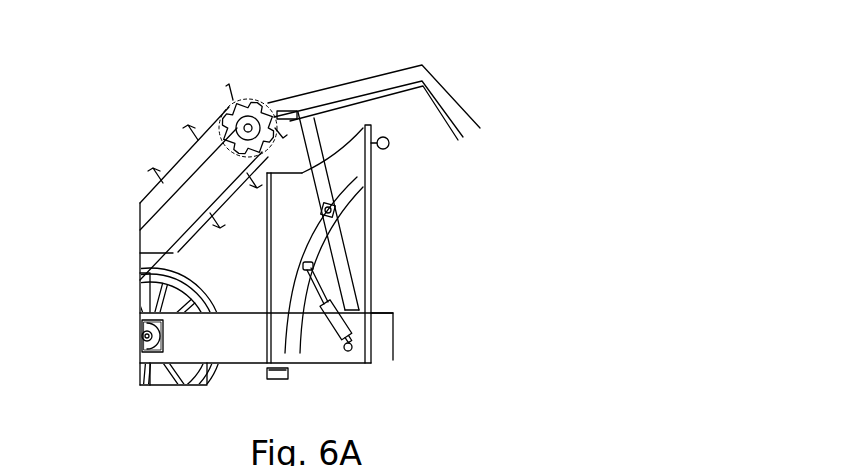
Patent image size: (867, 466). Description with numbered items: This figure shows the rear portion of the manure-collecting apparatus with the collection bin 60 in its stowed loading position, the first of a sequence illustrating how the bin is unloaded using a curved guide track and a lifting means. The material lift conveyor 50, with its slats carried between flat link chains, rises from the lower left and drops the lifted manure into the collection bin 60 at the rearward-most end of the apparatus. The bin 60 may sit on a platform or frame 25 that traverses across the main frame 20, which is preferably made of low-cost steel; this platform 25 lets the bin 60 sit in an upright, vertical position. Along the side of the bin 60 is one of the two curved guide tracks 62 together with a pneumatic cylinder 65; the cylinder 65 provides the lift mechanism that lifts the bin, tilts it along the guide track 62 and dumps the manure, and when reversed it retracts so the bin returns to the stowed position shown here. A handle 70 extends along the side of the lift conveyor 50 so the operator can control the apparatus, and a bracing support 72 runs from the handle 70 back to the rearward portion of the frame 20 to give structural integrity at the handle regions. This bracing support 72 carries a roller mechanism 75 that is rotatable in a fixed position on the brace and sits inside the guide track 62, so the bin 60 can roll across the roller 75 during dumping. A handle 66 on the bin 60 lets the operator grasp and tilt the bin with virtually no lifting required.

The frame 20 is at (187, 357).
The platform or frame 25 is at (282, 382).
The material lift conveyor 50 is at (185, 160).
The collection bin 60 is at (374, 258).
The curved guide track 62 is at (297, 258).
The pneumatic cylinder 65 is at (350, 333).
The handle 66 is at (387, 153).
The handle 70 is at (442, 93).
The bracing support 72 is at (310, 137).
The roller mechanism 75 is at (334, 216).